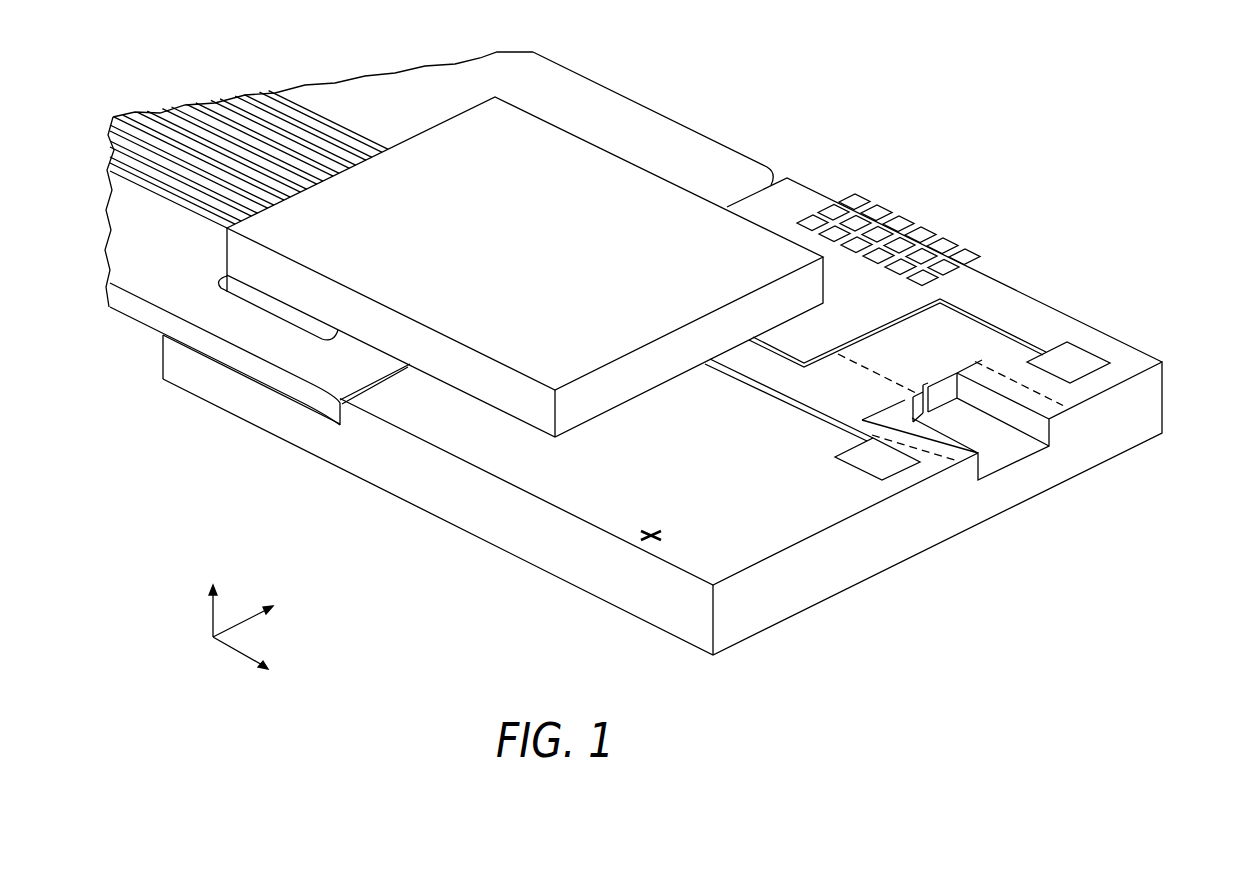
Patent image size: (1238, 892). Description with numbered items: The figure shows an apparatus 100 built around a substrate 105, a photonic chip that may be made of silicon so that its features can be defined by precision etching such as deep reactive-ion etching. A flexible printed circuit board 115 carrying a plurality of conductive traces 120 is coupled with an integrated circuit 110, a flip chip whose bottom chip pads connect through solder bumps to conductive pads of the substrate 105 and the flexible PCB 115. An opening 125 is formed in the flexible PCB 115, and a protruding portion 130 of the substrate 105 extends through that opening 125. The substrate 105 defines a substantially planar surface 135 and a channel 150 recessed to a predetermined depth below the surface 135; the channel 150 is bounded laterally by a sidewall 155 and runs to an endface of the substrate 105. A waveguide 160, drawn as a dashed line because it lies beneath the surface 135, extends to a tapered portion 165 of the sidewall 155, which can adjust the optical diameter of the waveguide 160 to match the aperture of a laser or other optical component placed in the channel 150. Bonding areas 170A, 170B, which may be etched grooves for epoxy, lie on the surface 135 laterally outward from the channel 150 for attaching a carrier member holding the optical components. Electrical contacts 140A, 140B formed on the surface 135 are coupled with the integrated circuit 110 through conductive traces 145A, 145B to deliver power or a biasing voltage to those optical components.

The apparatus 100 is at (908, 90).
The substrate 105 is at (572, 577).
The integrated circuit 110 is at (556, 254).
The flexible printed circuit board 115 is at (572, 82).
The conductive traces 120 is at (314, 105).
The opening 125 is at (222, 280).
The protruding portion 130 is at (217, 410).
The surface 135 is at (724, 500).
The electrical contact 140A is at (870, 463).
The electrical contact 140B is at (1082, 358).
The conductive trace 145A is at (757, 392).
The conductive trace 145B is at (878, 325).
The channel 150 is at (1012, 451).
The sidewall 155 is at (940, 392).
The waveguide 160 is at (882, 380).
The tapered portion 165 is at (920, 418).
The bonding area 170A is at (937, 457).
The bonding area 170B is at (1063, 406).